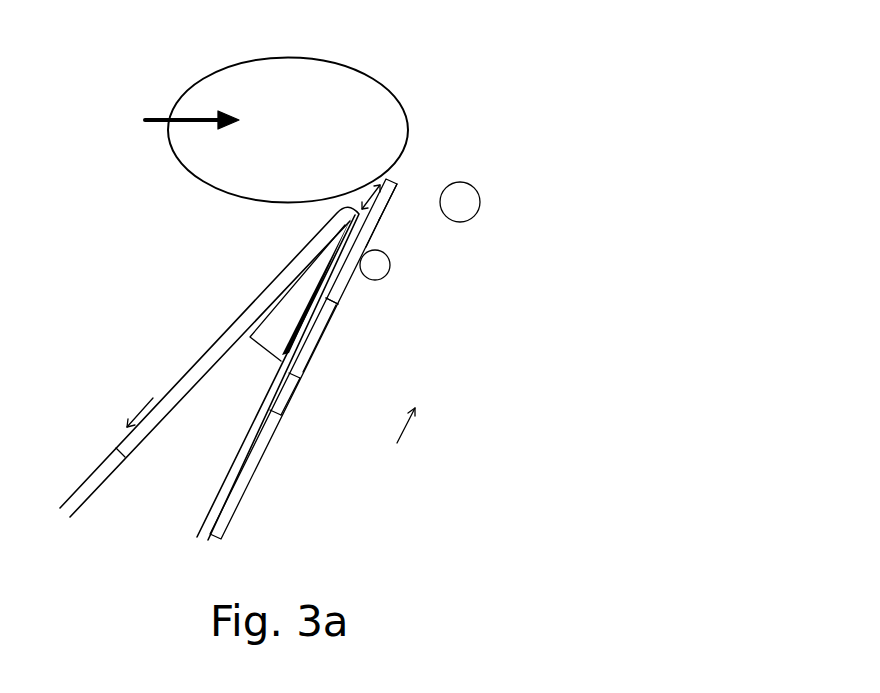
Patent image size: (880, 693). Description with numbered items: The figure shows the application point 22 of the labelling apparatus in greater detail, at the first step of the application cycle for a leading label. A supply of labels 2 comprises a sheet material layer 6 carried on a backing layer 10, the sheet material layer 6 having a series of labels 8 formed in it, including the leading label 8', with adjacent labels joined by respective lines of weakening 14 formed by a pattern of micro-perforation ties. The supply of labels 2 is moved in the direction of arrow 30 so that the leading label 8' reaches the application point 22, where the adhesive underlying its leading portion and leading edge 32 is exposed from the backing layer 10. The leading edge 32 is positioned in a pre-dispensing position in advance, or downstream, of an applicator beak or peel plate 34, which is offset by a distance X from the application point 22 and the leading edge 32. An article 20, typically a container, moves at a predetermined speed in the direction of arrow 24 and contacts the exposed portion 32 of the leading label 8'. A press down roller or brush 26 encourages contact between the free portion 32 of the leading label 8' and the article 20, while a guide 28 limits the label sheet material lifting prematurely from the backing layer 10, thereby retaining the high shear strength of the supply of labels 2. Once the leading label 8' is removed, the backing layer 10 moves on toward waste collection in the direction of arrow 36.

The supply of labels 2 is at (303, 374).
The sheet material layer 6 is at (345, 287).
The following labels 8 is at (303, 359).
The leading label 8' is at (424, 218).
The backing layer 10 is at (116, 448).
The line of weakening 14 is at (334, 303).
The article 20 is at (348, 90).
The application point 22 is at (389, 176).
The arrow 24 is at (172, 118).
The press down roller or brush 26 is at (479, 205).
The guide 28 is at (388, 275).
The arrow 30 is at (417, 432).
The leading edge 32 is at (381, 218).
The applicator beak or peel plate 34 is at (313, 264).
The arrow 36 is at (138, 410).
The distance X is at (358, 208).